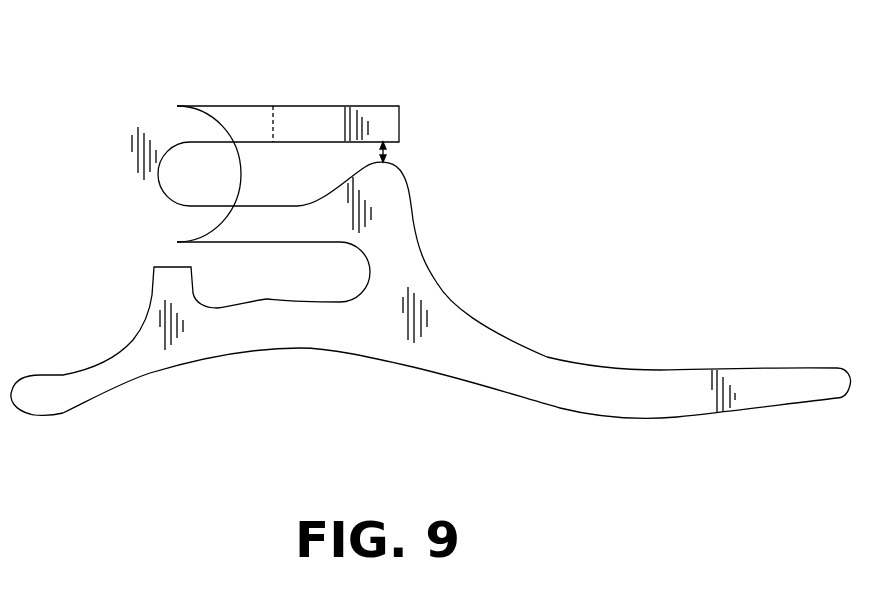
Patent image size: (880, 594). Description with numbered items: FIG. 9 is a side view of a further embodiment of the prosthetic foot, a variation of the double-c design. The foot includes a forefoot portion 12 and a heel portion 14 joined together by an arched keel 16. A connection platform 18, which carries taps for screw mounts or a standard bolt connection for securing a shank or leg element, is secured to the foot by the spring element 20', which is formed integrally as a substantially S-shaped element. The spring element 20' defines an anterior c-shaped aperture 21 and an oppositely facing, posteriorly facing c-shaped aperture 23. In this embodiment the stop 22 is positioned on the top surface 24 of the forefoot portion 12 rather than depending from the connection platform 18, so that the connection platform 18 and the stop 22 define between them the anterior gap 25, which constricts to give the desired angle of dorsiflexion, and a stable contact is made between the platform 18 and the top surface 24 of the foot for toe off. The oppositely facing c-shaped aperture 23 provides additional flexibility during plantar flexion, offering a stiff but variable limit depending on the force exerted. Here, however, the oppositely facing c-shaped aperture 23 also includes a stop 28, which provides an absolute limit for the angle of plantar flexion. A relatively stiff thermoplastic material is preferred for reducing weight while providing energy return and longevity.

The forefoot portion 12 is at (613, 375).
The heel portion 14 is at (65, 400).
The arched keel 16 is at (487, 387).
The connection platform 18 is at (307, 117).
The spring element 20' is at (128, 175).
The c-shaped aperture 21 is at (215, 158).
The stop 22 is at (393, 190).
The oppositely facing c-shaped aperture 23 is at (322, 278).
The top surface 24 is at (435, 282).
The anterior gap 25 is at (386, 152).
The stop 28 is at (167, 283).